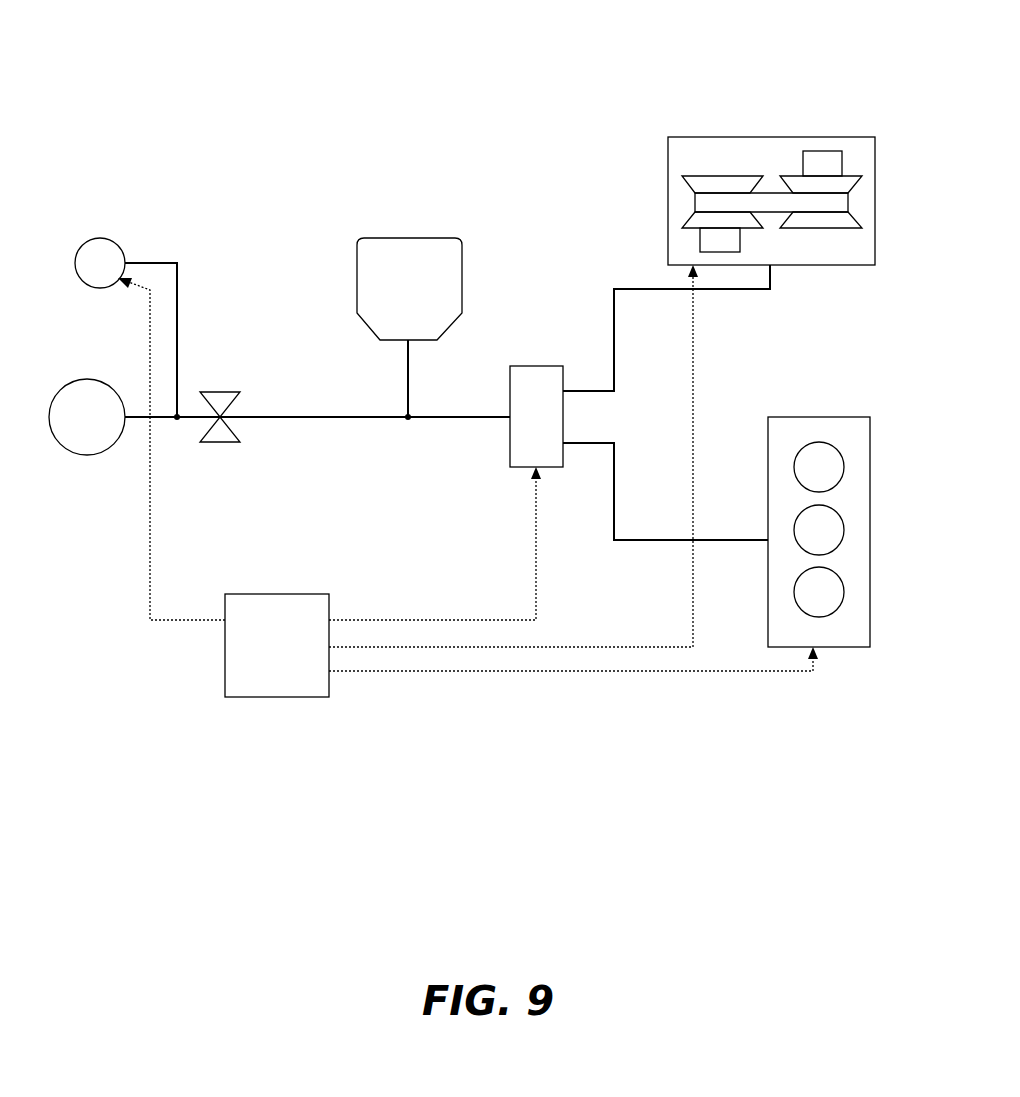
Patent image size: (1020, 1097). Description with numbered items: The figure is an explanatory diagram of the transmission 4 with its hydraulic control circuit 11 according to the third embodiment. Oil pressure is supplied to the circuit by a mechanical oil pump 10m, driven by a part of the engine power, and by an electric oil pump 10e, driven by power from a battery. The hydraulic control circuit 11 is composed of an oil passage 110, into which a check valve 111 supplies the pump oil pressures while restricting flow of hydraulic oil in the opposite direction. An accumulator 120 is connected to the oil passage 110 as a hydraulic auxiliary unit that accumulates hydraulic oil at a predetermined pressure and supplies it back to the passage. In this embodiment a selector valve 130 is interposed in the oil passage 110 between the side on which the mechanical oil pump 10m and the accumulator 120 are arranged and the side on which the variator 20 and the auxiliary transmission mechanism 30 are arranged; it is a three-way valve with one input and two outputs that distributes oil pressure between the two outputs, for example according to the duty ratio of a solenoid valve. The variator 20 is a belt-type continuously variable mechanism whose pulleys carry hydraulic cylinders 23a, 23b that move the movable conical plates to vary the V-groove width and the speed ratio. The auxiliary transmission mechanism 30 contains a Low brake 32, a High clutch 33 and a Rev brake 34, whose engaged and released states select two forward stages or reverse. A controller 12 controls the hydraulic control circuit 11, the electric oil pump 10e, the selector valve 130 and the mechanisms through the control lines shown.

The transmission 4 is at (662, 87).
The electric oil pump 10e is at (96, 238).
The mechanical oil pump 10m is at (87, 379).
The hydraulic control circuit 11 is at (382, 455).
The controller 12 is at (290, 594).
The variator 20 is at (752, 137).
The hydraulic cylinder 23a is at (700, 243).
The hydraulic cylinder 23b is at (823, 151).
The auxiliary transmission mechanism 30 is at (817, 417).
The Low brake 32 is at (794, 467).
The High clutch 33 is at (794, 530).
The Rev brake 34 is at (794, 592).
The oil passage 110 is at (300, 416).
The check valve 111 is at (222, 391).
The accumulator 120 is at (408, 238).
The selector valve 130 is at (537, 366).